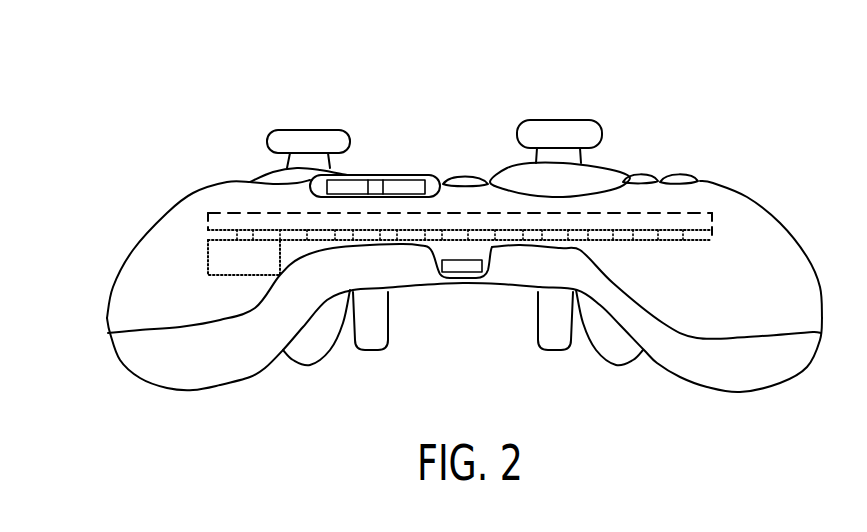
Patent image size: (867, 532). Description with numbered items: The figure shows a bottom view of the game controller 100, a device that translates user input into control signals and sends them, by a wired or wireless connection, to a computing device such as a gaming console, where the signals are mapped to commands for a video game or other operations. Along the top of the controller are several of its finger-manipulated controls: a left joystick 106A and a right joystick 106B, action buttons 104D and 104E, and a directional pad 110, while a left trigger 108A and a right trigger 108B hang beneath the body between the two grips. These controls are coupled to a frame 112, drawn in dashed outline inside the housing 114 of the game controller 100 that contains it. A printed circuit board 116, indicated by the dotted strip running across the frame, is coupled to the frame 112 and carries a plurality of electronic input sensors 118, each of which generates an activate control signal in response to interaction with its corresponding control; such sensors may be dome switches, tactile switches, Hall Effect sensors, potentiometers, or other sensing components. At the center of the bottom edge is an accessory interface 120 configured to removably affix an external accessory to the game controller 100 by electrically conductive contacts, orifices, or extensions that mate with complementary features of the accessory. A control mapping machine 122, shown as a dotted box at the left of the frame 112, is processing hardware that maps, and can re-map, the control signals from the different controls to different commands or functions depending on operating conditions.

The game controller 100 is at (143, 37).
The action button 104D is at (637, 171).
The action button 104E is at (690, 172).
The left joystick 106A is at (310, 130).
The right joystick 106B is at (570, 119).
The left trigger 108A is at (368, 353).
The right trigger 108B is at (557, 353).
The directional pad 110 is at (406, 153).
The frame 112 is at (208, 222).
The housing 114 is at (157, 228).
The printed circuit board 116 is at (712, 233).
The electronic input sensor 118 is at (657, 255).
The accessory interface 120 is at (467, 273).
The control mapping machine 122 is at (243, 277).